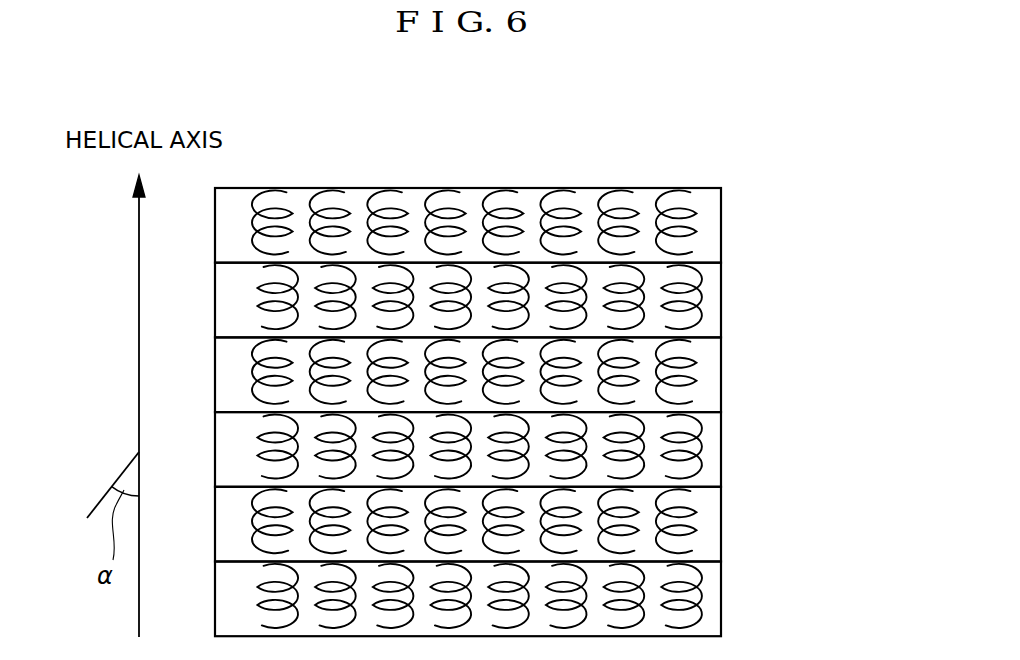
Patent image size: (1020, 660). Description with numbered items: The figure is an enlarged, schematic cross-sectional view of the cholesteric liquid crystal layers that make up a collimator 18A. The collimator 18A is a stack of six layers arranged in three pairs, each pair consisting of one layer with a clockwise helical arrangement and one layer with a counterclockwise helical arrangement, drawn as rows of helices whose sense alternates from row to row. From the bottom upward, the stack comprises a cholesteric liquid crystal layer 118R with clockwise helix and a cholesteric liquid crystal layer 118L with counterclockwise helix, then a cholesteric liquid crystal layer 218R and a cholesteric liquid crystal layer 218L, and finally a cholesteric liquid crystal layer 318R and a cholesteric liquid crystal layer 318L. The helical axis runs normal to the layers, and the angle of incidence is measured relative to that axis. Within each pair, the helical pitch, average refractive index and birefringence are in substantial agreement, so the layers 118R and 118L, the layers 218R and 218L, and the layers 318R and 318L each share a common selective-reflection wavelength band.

The collimator 18A is at (714, 160).
The cholesteric liquid crystal layer 318L is at (712, 221).
The cholesteric liquid crystal layer 318R is at (712, 297).
The cholesteric liquid crystal layer 218L is at (712, 372).
The cholesteric liquid crystal layer 218R is at (712, 446).
The cholesteric liquid crystal layer 118L is at (712, 521).
The cholesteric liquid crystal layer 118R is at (712, 595).